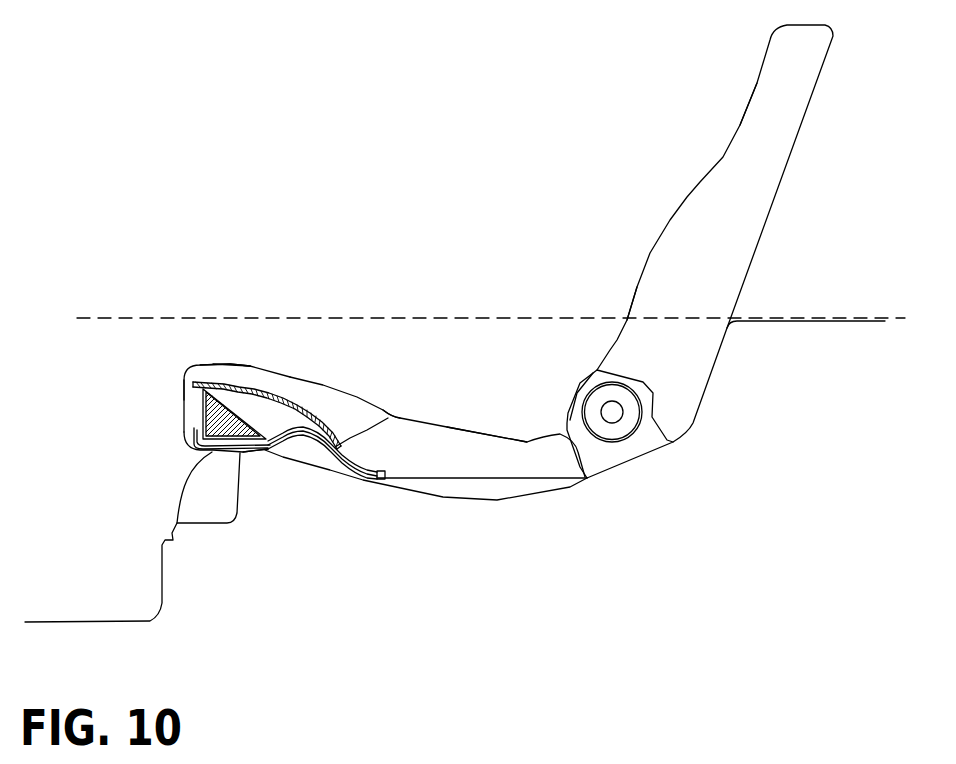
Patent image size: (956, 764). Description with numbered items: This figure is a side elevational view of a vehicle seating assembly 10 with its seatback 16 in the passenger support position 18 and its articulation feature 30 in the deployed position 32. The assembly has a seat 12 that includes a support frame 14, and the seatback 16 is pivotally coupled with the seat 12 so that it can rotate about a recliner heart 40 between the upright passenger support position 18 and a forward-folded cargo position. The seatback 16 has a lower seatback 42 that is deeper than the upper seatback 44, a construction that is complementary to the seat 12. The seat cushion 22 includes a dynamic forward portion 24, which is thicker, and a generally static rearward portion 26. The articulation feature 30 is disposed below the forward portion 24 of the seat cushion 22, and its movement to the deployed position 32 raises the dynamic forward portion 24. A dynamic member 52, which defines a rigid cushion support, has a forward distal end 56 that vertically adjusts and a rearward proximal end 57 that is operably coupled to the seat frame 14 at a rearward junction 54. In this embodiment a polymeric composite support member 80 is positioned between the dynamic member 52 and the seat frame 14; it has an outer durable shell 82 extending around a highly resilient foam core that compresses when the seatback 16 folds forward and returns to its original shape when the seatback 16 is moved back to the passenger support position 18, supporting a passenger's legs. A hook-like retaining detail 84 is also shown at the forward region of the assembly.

The vehicle seating assembly 10 is at (204, 142).
The seat 12 is at (355, 420).
The support frame 14 is at (373, 473).
The seatback 16 is at (760, 230).
The passenger support position 18 is at (609, 184).
The seat cushion 22 is at (407, 442).
The dynamic forward portion 24 is at (218, 373).
The static rearward portion 26 is at (535, 460).
The articulation feature 30 is at (162, 444).
The deployed position 32 is at (170, 370).
The recliner heart 40 is at (615, 422).
The lower seatback 42 is at (663, 283).
The upper seatback 44 is at (767, 90).
The dynamic member 52 is at (278, 372).
The rearward junction 54 is at (327, 453).
The forward distal end 56 is at (190, 367).
The rearward proximal end 57 is at (390, 418).
The polymeric composite support member 80 is at (203, 418).
The outer durable shell 82 is at (200, 392).
The hook 84 is at (258, 450).